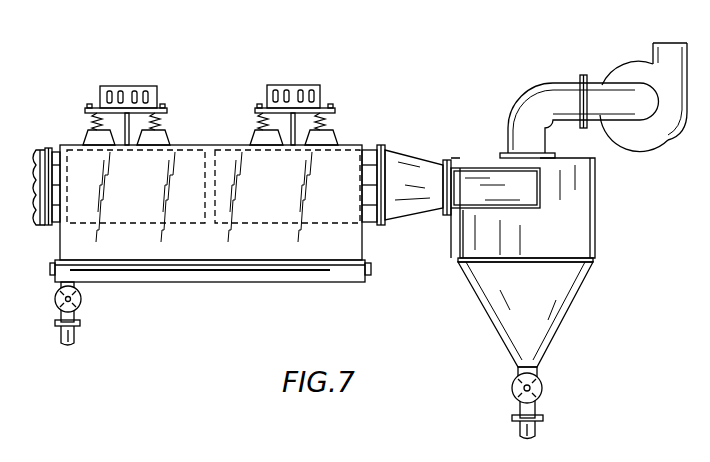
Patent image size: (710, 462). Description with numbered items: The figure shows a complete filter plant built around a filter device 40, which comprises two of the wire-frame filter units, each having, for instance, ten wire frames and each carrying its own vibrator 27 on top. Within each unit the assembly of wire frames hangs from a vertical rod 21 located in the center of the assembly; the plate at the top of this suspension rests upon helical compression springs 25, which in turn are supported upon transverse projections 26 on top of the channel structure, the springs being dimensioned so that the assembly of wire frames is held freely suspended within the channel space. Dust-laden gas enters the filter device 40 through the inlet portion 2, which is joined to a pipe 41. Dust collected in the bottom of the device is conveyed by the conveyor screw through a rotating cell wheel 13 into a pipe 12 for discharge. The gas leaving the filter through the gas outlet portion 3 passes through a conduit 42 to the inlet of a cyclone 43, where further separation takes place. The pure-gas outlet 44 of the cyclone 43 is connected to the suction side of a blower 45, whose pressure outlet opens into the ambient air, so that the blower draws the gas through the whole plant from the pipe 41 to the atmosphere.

The inlet portion 2 is at (52, 148).
The gas outlet portion 3 is at (381, 216).
The pipe 12 is at (77, 336).
The rotating cell wheel 13 is at (82, 300).
The vertical rod 21 is at (262, 124).
The helical compression spring 25 is at (160, 121).
The transverse projection 26 is at (168, 136).
The vibrator 27 is at (157, 87).
The filter device 40 is at (222, 268).
The pipe 41 is at (46, 222).
The conduit 42 is at (410, 165).
The cyclone 43 is at (575, 246).
The pure-gas outlet 44 is at (545, 103).
The blower 45 is at (657, 138).